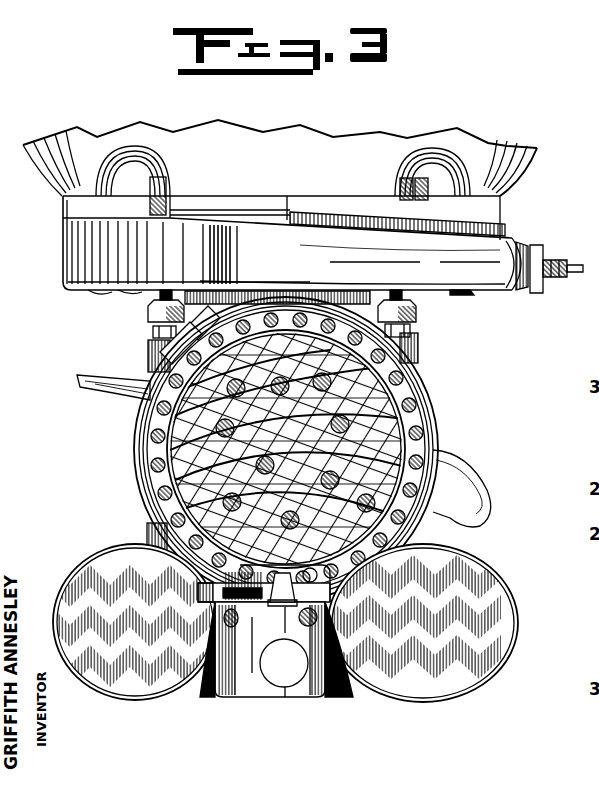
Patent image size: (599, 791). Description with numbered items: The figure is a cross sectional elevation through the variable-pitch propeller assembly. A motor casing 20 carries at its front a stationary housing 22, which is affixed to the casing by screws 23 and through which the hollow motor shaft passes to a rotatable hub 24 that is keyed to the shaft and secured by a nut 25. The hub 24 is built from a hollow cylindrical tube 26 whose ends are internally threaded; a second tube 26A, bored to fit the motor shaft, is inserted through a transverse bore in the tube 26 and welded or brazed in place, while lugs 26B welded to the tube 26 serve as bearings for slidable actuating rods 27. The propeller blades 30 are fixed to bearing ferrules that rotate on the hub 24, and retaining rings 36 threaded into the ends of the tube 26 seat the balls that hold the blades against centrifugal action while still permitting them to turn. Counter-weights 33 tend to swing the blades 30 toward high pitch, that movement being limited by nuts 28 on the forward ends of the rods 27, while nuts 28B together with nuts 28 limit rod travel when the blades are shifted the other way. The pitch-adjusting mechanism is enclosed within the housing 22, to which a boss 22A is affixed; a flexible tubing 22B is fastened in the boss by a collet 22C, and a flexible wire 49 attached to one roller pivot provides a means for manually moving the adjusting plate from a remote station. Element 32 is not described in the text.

The motor casing 20 is at (394, 146).
The stationary housing 22 is at (63, 256).
The boss 22A is at (496, 292).
The flexible tubing 22B is at (553, 262).
The collet 22C is at (546, 293).
The screws 23 is at (98, 292).
The rotatable hub 24 is at (432, 401).
The nut 25 is at (280, 697).
The hollow cylindrical tube 26 is at (432, 388).
The tube 26A is at (332, 290).
The lugs 26B is at (148, 350).
The actuating rods 27 is at (153, 332).
The nuts 28 is at (152, 566).
The nuts 28B is at (148, 318).
The propeller blades 30 is at (78, 381).
The mesh 32 is at (190, 440).
The counter-weights 33 is at (142, 700).
The retaining rings 36 is at (420, 418).
The flexible wire 49 is at (574, 266).